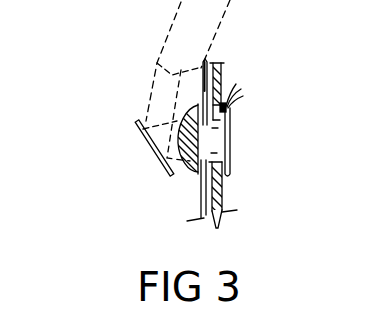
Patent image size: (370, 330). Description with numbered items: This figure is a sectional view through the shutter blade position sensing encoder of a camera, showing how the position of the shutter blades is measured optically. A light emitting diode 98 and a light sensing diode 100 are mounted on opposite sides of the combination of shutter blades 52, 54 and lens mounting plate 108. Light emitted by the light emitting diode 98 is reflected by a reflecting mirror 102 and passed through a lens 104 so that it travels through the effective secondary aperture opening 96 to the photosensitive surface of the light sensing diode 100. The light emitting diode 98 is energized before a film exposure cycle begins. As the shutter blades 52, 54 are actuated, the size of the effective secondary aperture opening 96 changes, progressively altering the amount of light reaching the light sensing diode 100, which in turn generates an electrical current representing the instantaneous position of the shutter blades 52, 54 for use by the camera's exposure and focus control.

The shutter blade 52 is at (202, 104).
The shutter blade 54 is at (222, 90).
The effective secondary aperture opening 96 is at (217, 145).
The light emitting diode 98 is at (172, 44).
The light sensing diode 100 is at (230, 127).
The reflecting mirror 102 is at (148, 142).
The lens 104 is at (189, 173).
The lens mounting plate 108 is at (222, 192).